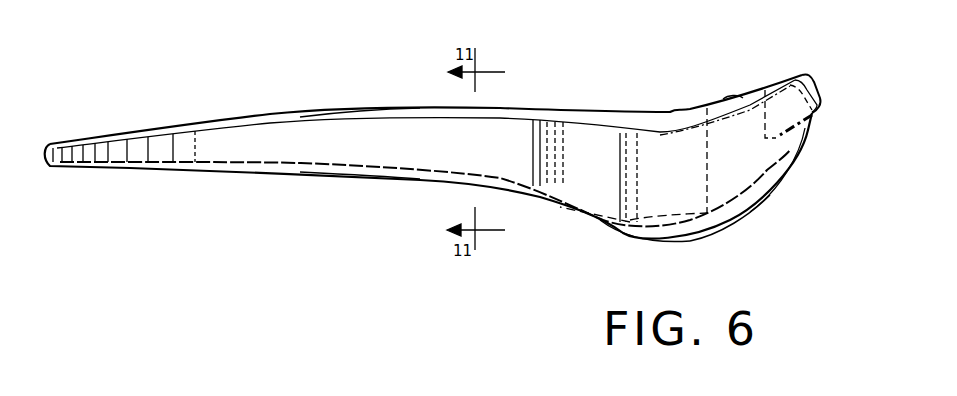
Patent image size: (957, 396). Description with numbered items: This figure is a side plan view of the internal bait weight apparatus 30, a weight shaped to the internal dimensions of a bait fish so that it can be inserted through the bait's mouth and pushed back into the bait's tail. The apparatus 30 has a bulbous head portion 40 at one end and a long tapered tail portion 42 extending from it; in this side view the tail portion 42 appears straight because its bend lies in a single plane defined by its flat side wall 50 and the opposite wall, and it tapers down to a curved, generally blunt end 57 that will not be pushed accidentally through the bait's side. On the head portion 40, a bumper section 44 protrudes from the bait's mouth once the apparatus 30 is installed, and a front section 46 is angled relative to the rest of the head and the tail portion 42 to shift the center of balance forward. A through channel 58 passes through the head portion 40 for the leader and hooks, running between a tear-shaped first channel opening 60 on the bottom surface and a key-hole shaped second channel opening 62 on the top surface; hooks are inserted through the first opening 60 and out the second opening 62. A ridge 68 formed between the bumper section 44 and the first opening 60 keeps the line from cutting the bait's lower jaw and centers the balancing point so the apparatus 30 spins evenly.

The internal bait weight apparatus 30 is at (553, 96).
The bulbous head portion 40 is at (648, 249).
The tapered tail portion 42 is at (347, 106).
The bumper section 44 is at (807, 93).
The front section 46 is at (690, 108).
The side wall 50 is at (340, 147).
The blunt end 57 is at (48, 162).
The through channel 58 is at (773, 170).
The first channel opening 60 is at (767, 210).
The second channel opening 62 is at (730, 93).
The ridge 68 is at (808, 127).